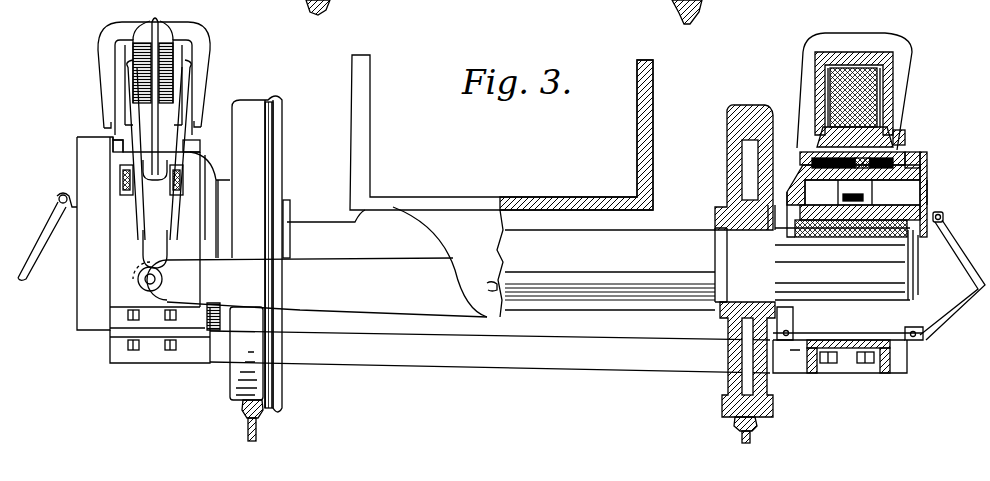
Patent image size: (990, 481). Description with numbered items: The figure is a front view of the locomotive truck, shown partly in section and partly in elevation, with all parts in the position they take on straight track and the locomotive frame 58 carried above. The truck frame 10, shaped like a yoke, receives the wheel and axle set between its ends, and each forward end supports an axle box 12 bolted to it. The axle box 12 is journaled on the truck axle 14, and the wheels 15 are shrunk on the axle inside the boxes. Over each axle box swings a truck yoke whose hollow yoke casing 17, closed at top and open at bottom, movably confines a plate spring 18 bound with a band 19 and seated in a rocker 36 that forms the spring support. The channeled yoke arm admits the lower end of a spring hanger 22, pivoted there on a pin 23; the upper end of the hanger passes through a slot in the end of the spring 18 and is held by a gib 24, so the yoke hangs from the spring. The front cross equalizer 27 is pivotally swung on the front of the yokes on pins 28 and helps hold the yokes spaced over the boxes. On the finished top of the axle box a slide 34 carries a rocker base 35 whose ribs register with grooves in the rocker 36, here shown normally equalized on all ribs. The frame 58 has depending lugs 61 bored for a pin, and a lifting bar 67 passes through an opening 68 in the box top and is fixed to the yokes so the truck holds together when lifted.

The truck frame 10 is at (340, 364).
The axle box 12 is at (85, 288).
The truck axle 14 is at (270, 181).
The wheels 15 is at (673, 234).
The yoke casing 17 is at (108, 35).
The plate spring 18 is at (868, 96).
The band 19 is at (886, 121).
The spring hanger 22 is at (153, 93).
The pin 23 is at (128, 182).
The gib 24 is at (167, 33).
The front cross equalizer 27 is at (380, 255).
The pins 28 is at (162, 279).
The slide 34 is at (192, 150).
The rocker base 35 is at (797, 158).
The rocker 36 is at (183, 66).
The locomotive frame 58 is at (366, 118).
The depending lugs 61 is at (484, 322).
The lifting bar 67 is at (853, 203).
The opening 68 is at (110, 153).